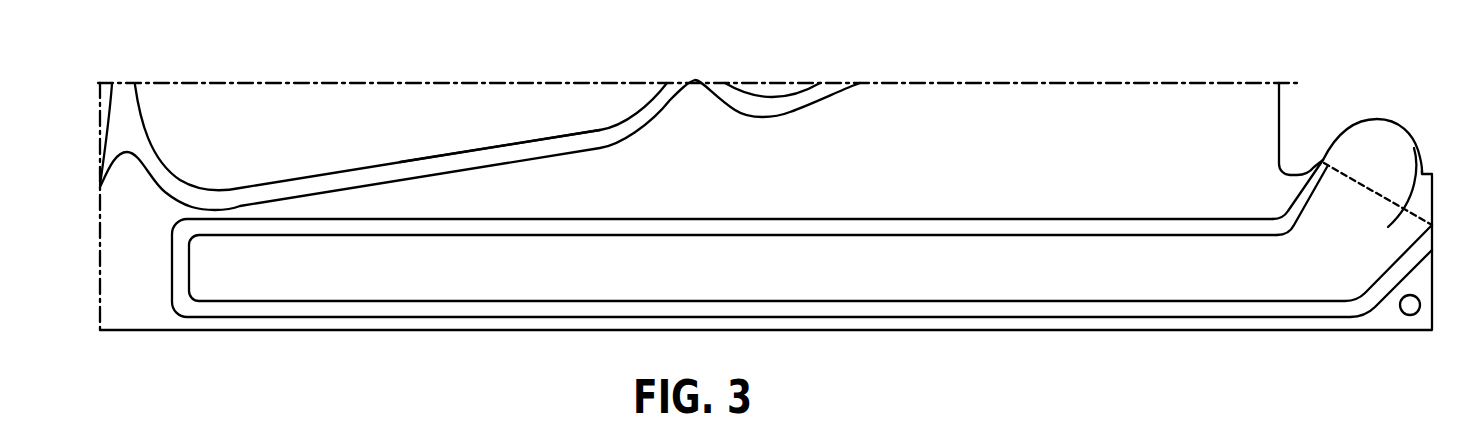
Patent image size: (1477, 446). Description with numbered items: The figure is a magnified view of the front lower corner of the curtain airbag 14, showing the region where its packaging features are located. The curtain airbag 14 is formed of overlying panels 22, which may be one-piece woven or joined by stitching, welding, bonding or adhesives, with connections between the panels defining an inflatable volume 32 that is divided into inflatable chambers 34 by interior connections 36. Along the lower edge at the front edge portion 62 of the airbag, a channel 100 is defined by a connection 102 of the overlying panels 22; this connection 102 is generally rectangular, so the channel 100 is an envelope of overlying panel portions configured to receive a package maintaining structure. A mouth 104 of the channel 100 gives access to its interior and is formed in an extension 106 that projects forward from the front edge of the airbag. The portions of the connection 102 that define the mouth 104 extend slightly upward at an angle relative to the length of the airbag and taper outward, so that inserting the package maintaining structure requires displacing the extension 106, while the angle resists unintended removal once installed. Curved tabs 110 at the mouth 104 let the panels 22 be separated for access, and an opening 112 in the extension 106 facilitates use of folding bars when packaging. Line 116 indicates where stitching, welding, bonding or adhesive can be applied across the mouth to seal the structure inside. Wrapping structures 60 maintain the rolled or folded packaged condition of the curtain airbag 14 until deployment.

The curtain airbag 14 is at (957, 120).
The overlying panels 22 is at (878, 133).
The inflatable volume 32 is at (353, 127).
The inflatable chambers 34 is at (473, 153).
The interior connections 36 is at (123, 118).
The wrapping structures 60 is at (795, 322).
The front edge portion 62 is at (1272, 128).
The channel 100 is at (853, 270).
The connection 102 is at (640, 223).
The mouth 104 is at (1342, 203).
The extension 106 is at (1410, 130).
The curved tabs 110 is at (1347, 133).
The opening 112 is at (1408, 315).
The line 116 is at (1373, 190).